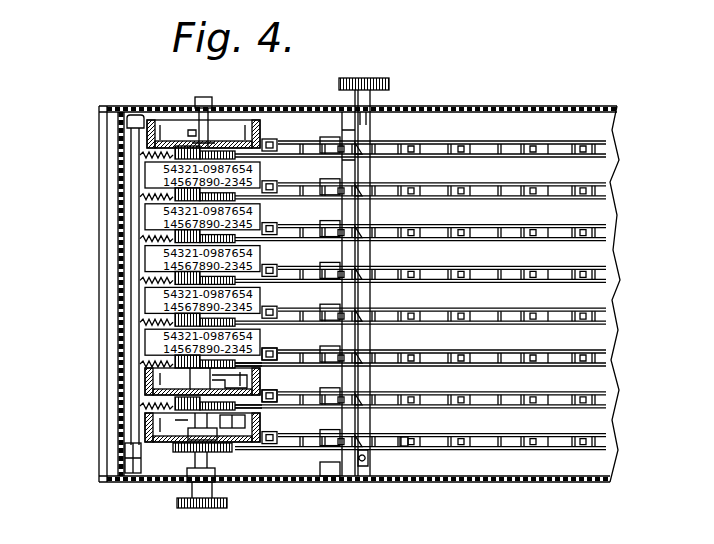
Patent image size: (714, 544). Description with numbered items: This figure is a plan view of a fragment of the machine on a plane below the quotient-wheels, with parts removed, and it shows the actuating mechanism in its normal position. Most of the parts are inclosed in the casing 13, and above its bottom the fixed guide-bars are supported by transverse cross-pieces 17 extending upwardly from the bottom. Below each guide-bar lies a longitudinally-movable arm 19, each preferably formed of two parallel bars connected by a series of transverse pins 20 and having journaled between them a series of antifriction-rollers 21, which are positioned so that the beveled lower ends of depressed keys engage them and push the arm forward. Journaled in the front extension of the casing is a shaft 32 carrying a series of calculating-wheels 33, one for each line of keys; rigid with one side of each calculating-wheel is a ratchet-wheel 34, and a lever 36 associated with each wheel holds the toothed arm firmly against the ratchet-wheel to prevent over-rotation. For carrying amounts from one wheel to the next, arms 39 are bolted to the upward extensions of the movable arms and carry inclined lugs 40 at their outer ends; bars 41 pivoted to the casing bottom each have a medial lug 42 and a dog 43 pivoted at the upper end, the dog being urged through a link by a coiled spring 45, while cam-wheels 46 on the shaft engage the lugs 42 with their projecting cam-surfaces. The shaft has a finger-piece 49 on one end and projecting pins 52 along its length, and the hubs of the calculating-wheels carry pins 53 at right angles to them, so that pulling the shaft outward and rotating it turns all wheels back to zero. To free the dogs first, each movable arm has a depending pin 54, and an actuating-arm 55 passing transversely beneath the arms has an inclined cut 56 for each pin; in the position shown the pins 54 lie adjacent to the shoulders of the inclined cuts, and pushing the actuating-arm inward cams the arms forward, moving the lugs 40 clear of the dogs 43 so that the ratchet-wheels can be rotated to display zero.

The casing 13 is at (490, 107).
The transverse cross-piece 17 is at (348, 467).
The longitudinally-movable arm 19 is at (485, 452).
The transverse pin 20 is at (427, 442).
The antifriction-roller 21 is at (402, 442).
The shaft 32 is at (198, 455).
The calculating-wheel 33 is at (145, 428).
The ratchet-wheel 34 is at (137, 407).
The lever 36 is at (285, 406).
The arm 39 is at (296, 357).
The inclined lug 40 is at (228, 420).
The bar 41 is at (277, 350).
The lug 42 is at (216, 447).
The dog 43 is at (262, 406).
The coiled spring 45 is at (140, 363).
The cam-wheel 46 is at (143, 382).
The finger-piece 49 is at (204, 510).
The pin 52 is at (218, 417).
The pin 53 is at (183, 418).
The depending pin 54 is at (375, 270).
The actuating-arm 55 is at (372, 102).
The inclined cut 56 is at (358, 223).